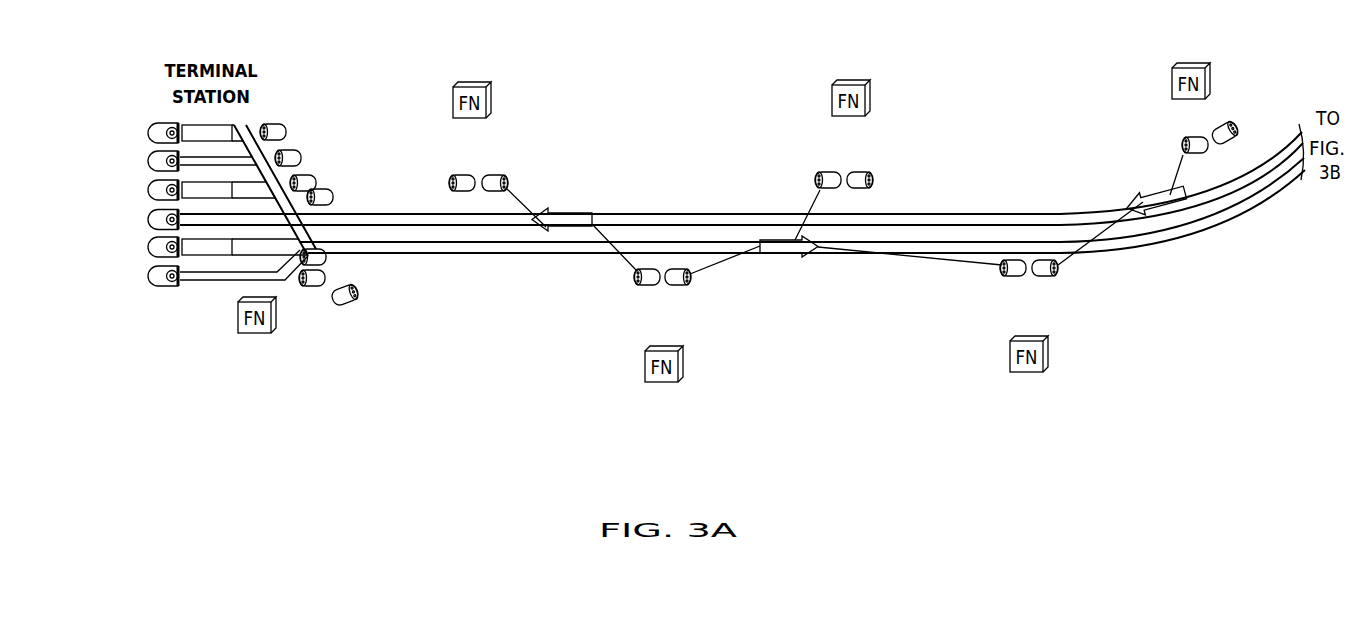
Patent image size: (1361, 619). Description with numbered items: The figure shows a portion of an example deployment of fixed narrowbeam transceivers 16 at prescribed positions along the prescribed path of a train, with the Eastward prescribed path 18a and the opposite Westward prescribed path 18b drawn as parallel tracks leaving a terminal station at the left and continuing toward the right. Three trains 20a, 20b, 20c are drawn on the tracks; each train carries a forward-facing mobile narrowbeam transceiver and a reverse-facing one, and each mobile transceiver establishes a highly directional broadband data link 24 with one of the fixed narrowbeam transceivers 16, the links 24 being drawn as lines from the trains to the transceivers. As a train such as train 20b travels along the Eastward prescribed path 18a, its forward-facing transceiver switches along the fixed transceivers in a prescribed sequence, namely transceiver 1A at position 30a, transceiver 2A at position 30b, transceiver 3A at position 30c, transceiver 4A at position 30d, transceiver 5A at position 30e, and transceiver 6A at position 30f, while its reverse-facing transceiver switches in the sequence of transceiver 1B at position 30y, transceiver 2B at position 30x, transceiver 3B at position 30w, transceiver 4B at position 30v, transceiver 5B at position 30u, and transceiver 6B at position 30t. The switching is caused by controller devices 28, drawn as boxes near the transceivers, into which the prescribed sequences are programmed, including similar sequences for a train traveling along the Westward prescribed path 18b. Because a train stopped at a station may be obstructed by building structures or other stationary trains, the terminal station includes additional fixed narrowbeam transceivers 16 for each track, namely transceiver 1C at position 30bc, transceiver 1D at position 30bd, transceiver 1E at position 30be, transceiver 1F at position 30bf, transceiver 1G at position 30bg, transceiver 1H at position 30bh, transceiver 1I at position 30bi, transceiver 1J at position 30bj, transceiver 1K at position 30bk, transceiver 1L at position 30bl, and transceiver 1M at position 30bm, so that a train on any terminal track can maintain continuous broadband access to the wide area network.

The fixed narrowbeam transceiver 16 is at (163, 293).
The Eastward prescribed path 18a is at (1283, 183).
The Westward prescribed path 18b is at (1037, 212).
The train 20a is at (613, 185).
The train 20b is at (797, 290).
The train 20c is at (1215, 261).
The broadband data link 24 is at (523, 194).
The controller device 28 is at (480, 82).
The position of transceiver 1A 30a is at (314, 326).
The position of transceiver 2A 30b is at (446, 190).
The position of transceiver 3A 30c is at (640, 318).
The position of transceiver 4A 30d is at (810, 166).
The position of transceiver 5A 30e is at (1005, 312).
The position of transceiver 6A 30f is at (1170, 130).
The position of transceiver 6B 30t is at (1231, 108).
The position of transceiver 5B 30u is at (1056, 313).
The position of transceiver 4B 30v is at (880, 168).
The position of transceiver 3B 30w is at (688, 320).
The position of transceiver 2B 30x is at (503, 136).
The position of transceiver 1B 30y is at (352, 341).
The position of transceiver 1C 30bc is at (358, 268).
The position of transceiver 1D 30bd is at (352, 170).
The position of transceiver 1E 30be is at (338, 155).
The position of transceiver 1F 30bf is at (318, 125).
The position of transceiver 1G 30bg is at (283, 118).
The position of transceiver 1H 30bh is at (118, 131).
The position of transceiver 1I 30bi is at (118, 159).
The position of transceiver 1J 30bj is at (118, 188).
The position of transceiver 1K 30bk is at (118, 217).
The position of transceiver 1L 30bl is at (118, 245).
The position of transceiver 1M 30bm is at (118, 274).
The fixed narrowbeam transceiver 1A is at (320, 332).
The fixed narrowbeam transceiver 1B is at (355, 346).
The fixed narrowbeam transceiver 1C is at (373, 274).
The fixed narrowbeam transceiver 1D is at (362, 136).
The fixed narrowbeam transceiver 1E is at (336, 139).
The fixed narrowbeam transceiver 1F is at (319, 112).
The fixed narrowbeam transceiver 1G is at (290, 95).
The fixed narrowbeam transceiver 1H is at (142, 127).
The fixed narrowbeam transceiver 1I is at (152, 155).
The fixed narrowbeam transceiver 1J is at (161, 184).
The fixed narrowbeam transceiver 1K is at (110, 213).
The fixed narrowbeam transceiver 1L is at (178, 241).
The fixed narrowbeam transceiver 1M is at (171, 269).
The fixed narrowbeam transceiver 2A is at (418, 171).
The fixed narrowbeam transceiver 2B is at (507, 129).
The fixed narrowbeam transceiver 3A is at (628, 330).
The fixed narrowbeam transceiver 3B is at (697, 330).
The fixed narrowbeam transceiver 4A is at (785, 164).
The fixed narrowbeam transceiver 4B is at (904, 164).
The fixed narrowbeam transceiver 5A is at (995, 322).
The fixed narrowbeam transceiver 5B is at (1065, 325).
The fixed narrowbeam transceiver 6A is at (1154, 130).
The fixed narrowbeam transceiver 6B is at (1236, 92).